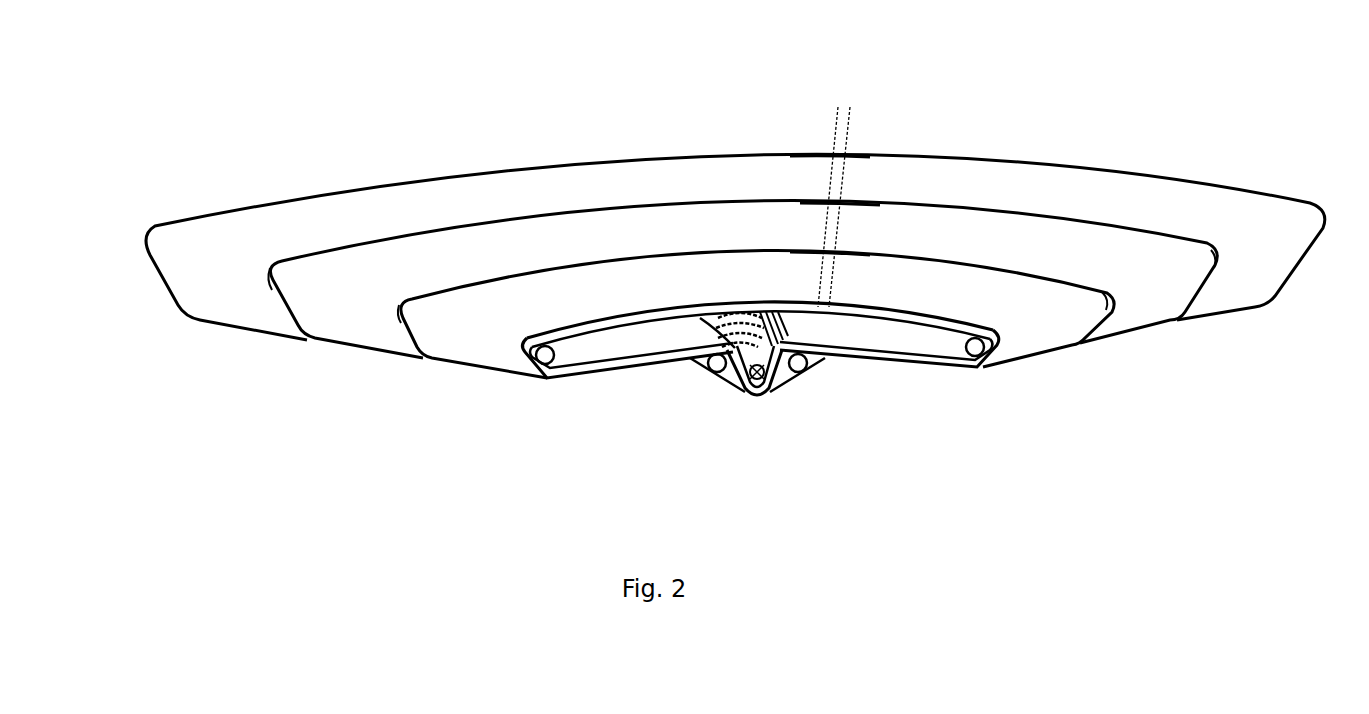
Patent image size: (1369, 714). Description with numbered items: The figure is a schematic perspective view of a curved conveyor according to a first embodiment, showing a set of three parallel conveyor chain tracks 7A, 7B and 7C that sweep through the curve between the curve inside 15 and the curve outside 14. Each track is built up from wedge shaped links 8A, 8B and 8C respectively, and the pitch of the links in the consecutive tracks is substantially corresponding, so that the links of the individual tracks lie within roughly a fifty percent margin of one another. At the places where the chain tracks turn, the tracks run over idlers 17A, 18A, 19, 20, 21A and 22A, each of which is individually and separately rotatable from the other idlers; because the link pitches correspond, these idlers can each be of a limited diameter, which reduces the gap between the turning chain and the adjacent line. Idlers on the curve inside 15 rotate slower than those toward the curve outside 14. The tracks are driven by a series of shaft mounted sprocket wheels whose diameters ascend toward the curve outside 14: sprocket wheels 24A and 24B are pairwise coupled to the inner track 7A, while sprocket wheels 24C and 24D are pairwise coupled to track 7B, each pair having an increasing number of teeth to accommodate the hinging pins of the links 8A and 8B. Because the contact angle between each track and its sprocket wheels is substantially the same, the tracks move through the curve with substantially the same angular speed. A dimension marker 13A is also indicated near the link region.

The curve outside 14 is at (688, 140).
The conveyor track 7A is at (1007, 290).
The conveyor track 7B is at (527, 237).
The conveyor track 7C is at (391, 190).
The wedge shaped links 8A is at (833, 280).
The wedge shaped links 8B is at (840, 215).
The wedge shaped links 8C is at (843, 178).
The tier offset distance 13A is at (813, 115).
The curve inside 15 is at (641, 384).
The idler 17A is at (549, 366).
The idler 18A is at (531, 349).
The idler 19 is at (712, 370).
The idler 20 is at (795, 367).
The idler 21A is at (992, 348).
The idler 22A is at (970, 352).
The sprocket wheel 24A is at (768, 350).
The sprocket wheel 24B is at (737, 330).
The sprocket wheel 24C is at (745, 335).
The sprocket wheel 24D is at (722, 345).